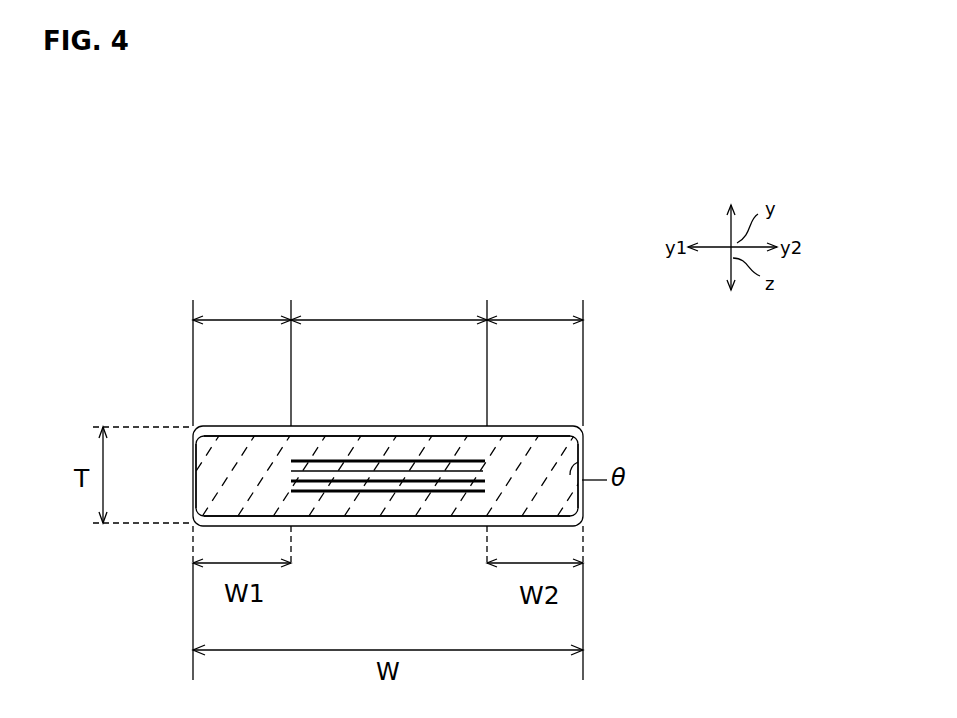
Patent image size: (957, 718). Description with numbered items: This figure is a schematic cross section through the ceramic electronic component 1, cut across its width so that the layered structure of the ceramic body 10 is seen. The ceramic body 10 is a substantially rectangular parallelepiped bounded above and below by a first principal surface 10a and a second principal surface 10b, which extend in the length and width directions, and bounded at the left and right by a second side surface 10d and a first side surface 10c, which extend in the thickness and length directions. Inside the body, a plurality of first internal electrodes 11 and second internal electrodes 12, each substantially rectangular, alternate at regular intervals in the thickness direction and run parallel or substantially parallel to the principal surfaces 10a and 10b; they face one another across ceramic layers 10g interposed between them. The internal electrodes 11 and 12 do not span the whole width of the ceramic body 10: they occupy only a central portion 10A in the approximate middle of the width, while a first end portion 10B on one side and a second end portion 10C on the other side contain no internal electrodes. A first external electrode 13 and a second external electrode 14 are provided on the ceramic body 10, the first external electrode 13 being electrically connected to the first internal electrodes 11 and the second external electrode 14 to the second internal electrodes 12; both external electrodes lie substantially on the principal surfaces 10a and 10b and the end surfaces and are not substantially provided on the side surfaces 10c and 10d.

The piezoelectric vibrating element 1 is at (497, 291).
The ceramic body 10 is at (333, 527).
The central portion 10A is at (389, 357).
The first end portion 10B is at (242, 357).
The second end portion 10C is at (535, 357).
The first principal surface 10a is at (421, 436).
The second principal surface 10b is at (383, 519).
The first side surface 10c is at (584, 498).
The second side surface 10d is at (196, 482).
The ceramic layers 10g is at (345, 470).
The first internal electrodes 11 is at (309, 460).
The second internal electrodes 12 is at (380, 480).
The first external electrode 13 is at (518, 424).
The second external electrode 14 is at (441, 527).